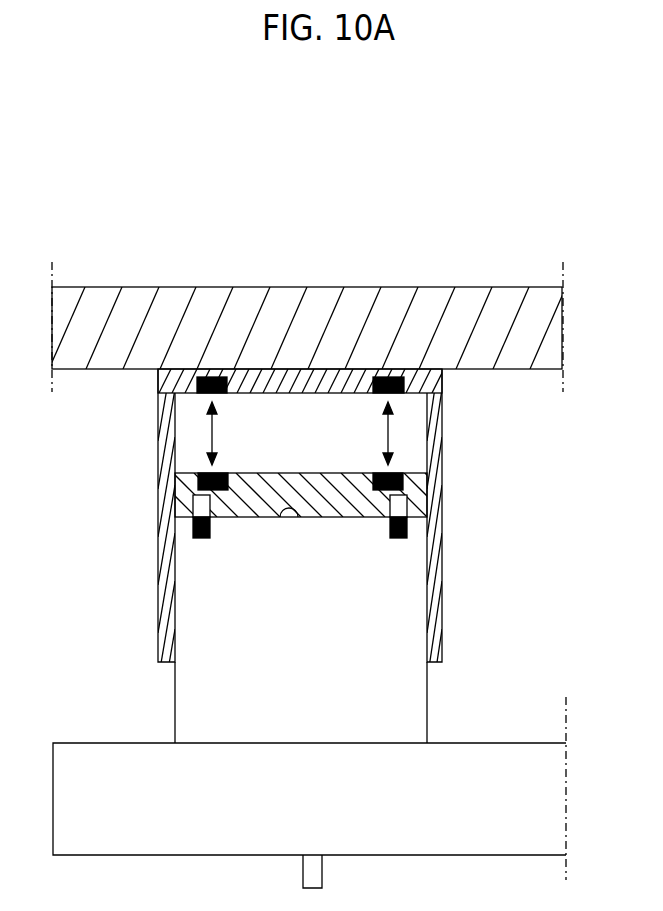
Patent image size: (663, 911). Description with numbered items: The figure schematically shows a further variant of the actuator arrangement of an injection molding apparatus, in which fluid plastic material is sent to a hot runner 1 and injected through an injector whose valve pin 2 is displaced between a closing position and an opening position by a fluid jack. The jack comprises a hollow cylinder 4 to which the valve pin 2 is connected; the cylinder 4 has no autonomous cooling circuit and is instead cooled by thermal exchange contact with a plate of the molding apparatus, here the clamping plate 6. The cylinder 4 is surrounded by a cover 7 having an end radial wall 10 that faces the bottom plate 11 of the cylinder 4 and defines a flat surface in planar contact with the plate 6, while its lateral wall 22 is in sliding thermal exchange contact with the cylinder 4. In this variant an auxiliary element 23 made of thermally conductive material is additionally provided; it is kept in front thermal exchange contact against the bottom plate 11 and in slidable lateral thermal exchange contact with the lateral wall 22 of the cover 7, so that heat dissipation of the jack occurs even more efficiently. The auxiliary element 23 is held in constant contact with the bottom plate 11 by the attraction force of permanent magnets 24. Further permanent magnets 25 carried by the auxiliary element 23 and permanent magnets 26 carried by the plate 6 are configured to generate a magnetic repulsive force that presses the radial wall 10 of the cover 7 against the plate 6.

The hot runner 1 is at (100, 768).
The valve pin 2 is at (302, 878).
The cylinder 4 is at (411, 678).
The clamping plate 6 is at (311, 303).
The cover 7 is at (312, 511).
The end radial wall 10 is at (182, 378).
The bottom plate 11 is at (291, 507).
The lateral wall 22 is at (168, 575).
The auxiliary element 23 is at (347, 503).
The permanent magnets 24 is at (207, 540).
The permanent magnets 25 is at (221, 472).
The permanent magnets 26 is at (222, 395).